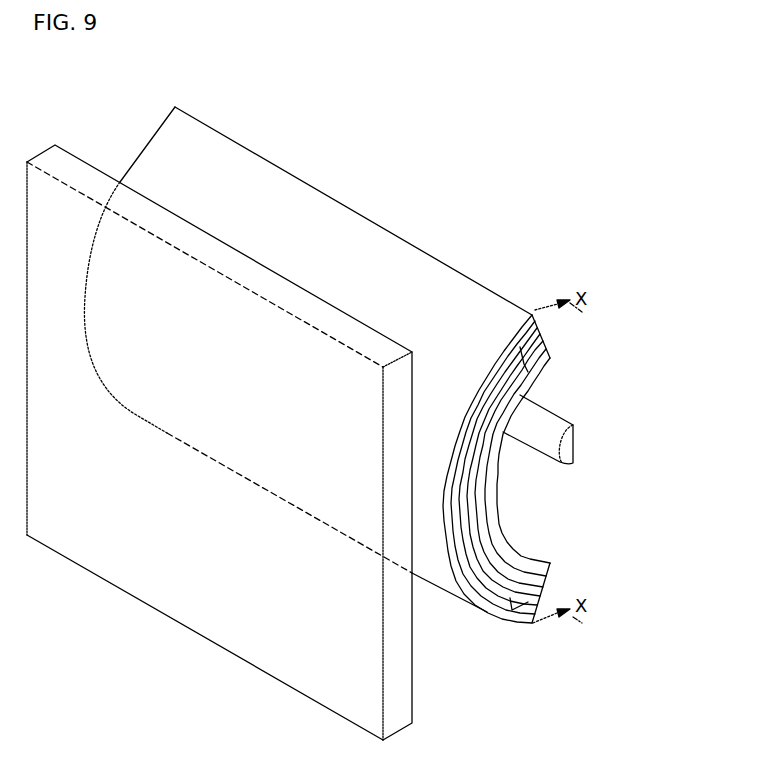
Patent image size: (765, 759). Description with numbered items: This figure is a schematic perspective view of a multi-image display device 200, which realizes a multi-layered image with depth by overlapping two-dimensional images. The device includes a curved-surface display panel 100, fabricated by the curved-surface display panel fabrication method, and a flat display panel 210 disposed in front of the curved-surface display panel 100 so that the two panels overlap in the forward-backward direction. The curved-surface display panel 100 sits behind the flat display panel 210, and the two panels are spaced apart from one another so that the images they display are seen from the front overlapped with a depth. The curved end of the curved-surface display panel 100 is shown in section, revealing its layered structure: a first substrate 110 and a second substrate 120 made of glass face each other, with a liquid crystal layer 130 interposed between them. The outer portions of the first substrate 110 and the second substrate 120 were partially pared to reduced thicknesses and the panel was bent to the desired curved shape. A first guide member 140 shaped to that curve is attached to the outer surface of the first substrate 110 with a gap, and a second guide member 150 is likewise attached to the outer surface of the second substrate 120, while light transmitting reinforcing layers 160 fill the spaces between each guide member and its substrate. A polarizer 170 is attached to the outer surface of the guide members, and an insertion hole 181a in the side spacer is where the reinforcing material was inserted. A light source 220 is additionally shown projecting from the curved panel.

The curved-surface display panel 100 is at (366, 199).
The first substrate 110 is at (552, 578).
The second substrate 120 is at (542, 332).
The liquid crystal layer 130 is at (553, 365).
The first guide member 140 is at (552, 565).
The second guide member 150 is at (533, 627).
The light transmitting reinforcing layer 160 is at (483, 495).
The polarizer 170 is at (518, 328).
The insertion hole 181a is at (475, 530).
The multi-image display device 200 is at (82, 117).
The flat display panel 210 is at (412, 682).
The light source 220 is at (573, 446).